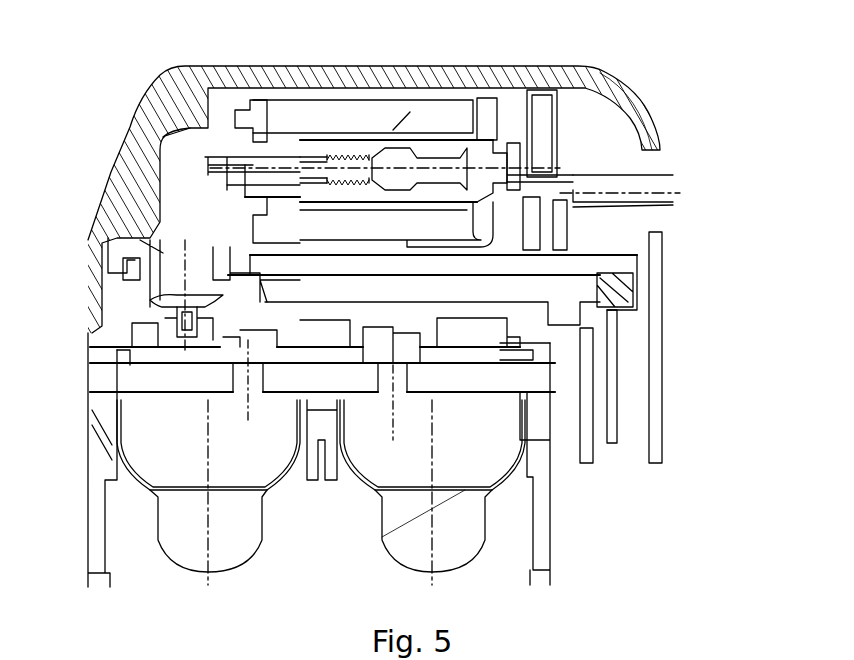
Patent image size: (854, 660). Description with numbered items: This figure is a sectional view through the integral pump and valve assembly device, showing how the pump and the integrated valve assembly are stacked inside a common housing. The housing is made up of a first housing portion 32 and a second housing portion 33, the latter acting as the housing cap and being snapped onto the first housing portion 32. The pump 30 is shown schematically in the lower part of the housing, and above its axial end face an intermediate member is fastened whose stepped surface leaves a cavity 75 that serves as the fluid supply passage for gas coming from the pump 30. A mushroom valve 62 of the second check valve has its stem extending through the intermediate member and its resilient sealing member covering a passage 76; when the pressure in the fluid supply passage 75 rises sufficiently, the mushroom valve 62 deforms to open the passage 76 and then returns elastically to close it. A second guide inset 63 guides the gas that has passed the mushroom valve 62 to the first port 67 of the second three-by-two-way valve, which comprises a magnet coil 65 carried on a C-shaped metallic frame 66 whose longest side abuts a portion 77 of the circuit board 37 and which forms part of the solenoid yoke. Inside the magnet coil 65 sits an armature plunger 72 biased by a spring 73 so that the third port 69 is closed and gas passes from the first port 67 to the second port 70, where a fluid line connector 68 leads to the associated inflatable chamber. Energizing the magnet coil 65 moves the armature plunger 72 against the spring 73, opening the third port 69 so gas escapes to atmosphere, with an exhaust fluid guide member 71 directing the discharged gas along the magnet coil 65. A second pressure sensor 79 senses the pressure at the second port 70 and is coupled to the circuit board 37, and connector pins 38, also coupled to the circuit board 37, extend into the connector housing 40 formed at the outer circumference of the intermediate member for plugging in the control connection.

The pump 30 is at (498, 489).
The first housing portion 32 is at (88, 492).
The second housing portion 33 is at (111, 172).
The circuit board 37 is at (637, 256).
The connector pins 38 is at (617, 422).
The connector housing 40 is at (662, 378).
The mushroom valve 62 is at (177, 295).
The second guide inset 63 is at (162, 138).
The magnet coil 65 is at (383, 116).
The metallic frame 66 is at (245, 195).
The first port 67 is at (208, 172).
The fluid line connector 68 is at (673, 175).
The third port 69 is at (508, 165).
The second port 70 is at (570, 190).
The exhaust fluid guide member 71 is at (557, 90).
The armature plunger 72 is at (430, 167).
The spring 73 is at (343, 150).
The cavity 75 is at (247, 343).
The passage 76 is at (200, 318).
The portion of the circuit board 77 is at (348, 255).
The second pressure sensor 79 is at (540, 242).